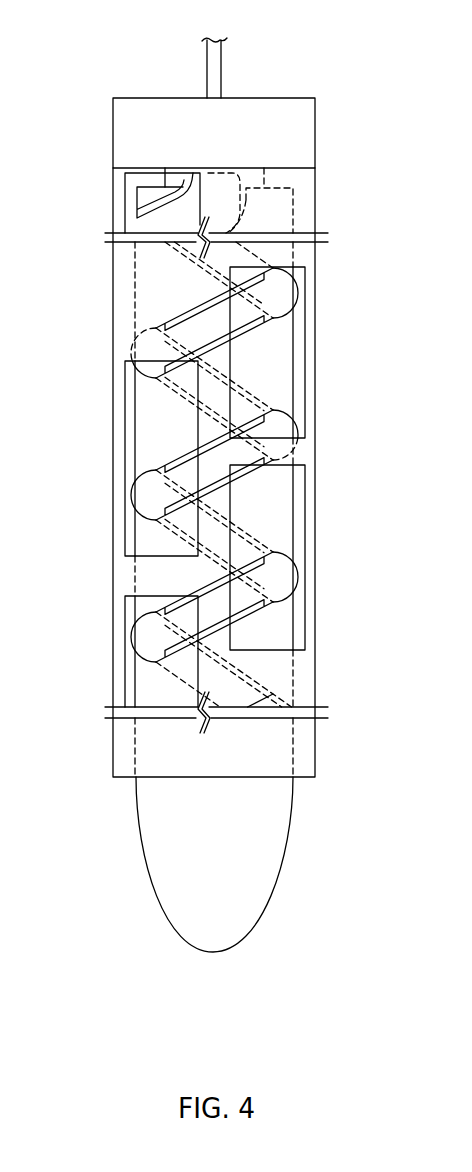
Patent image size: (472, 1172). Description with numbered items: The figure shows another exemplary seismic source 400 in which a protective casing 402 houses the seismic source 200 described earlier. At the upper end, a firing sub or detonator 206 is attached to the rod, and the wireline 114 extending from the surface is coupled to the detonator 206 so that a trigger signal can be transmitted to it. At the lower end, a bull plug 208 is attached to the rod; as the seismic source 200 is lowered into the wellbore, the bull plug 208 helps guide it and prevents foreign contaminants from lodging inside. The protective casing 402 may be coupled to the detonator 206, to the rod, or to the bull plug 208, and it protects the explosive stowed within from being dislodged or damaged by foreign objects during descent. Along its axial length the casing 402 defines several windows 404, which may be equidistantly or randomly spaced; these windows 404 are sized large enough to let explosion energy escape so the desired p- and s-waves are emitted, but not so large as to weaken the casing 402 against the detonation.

The wireline 114 is at (221, 68).
The seismic source 200 is at (68, 294).
The detonator 206 is at (114, 139).
The bull plug 208 is at (270, 873).
The seismic source 400 is at (368, 150).
The protective casing 402 is at (315, 490).
The windows 404 is at (125, 202).